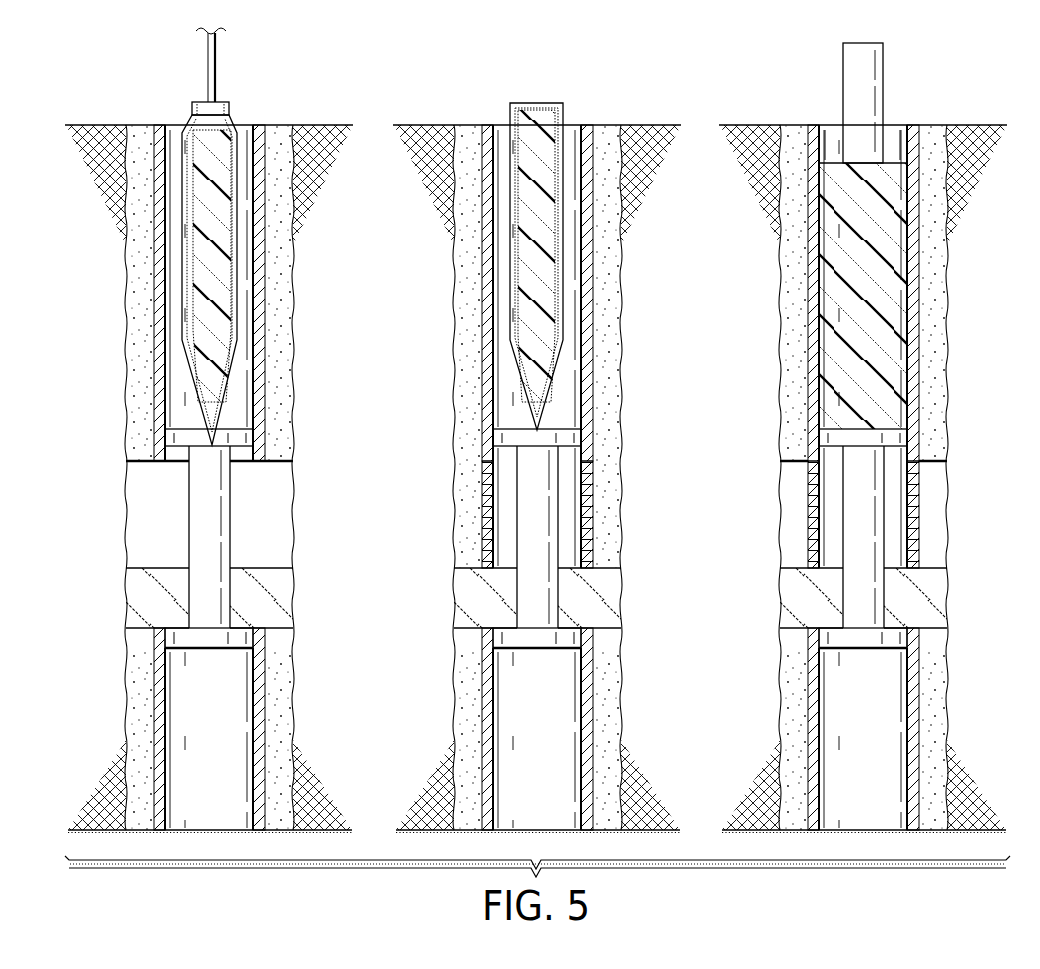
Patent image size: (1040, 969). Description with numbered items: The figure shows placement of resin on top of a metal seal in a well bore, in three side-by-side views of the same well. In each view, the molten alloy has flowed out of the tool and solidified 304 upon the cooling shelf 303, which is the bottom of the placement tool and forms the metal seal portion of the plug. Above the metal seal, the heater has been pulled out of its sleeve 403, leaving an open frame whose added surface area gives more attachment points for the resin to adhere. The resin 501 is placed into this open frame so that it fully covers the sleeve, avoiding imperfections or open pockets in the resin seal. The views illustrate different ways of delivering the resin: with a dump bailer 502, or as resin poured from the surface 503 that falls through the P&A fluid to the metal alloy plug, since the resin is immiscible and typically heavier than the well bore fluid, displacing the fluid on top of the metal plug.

The cooling shelf 303 is at (203, 650).
The solidified alloy 304 is at (170, 575).
The sleeve 403 is at (230, 500).
The resin 501 is at (187, 268).
The dump bailer 502 is at (572, 259).
The resin poured from the surface 503 is at (899, 103).